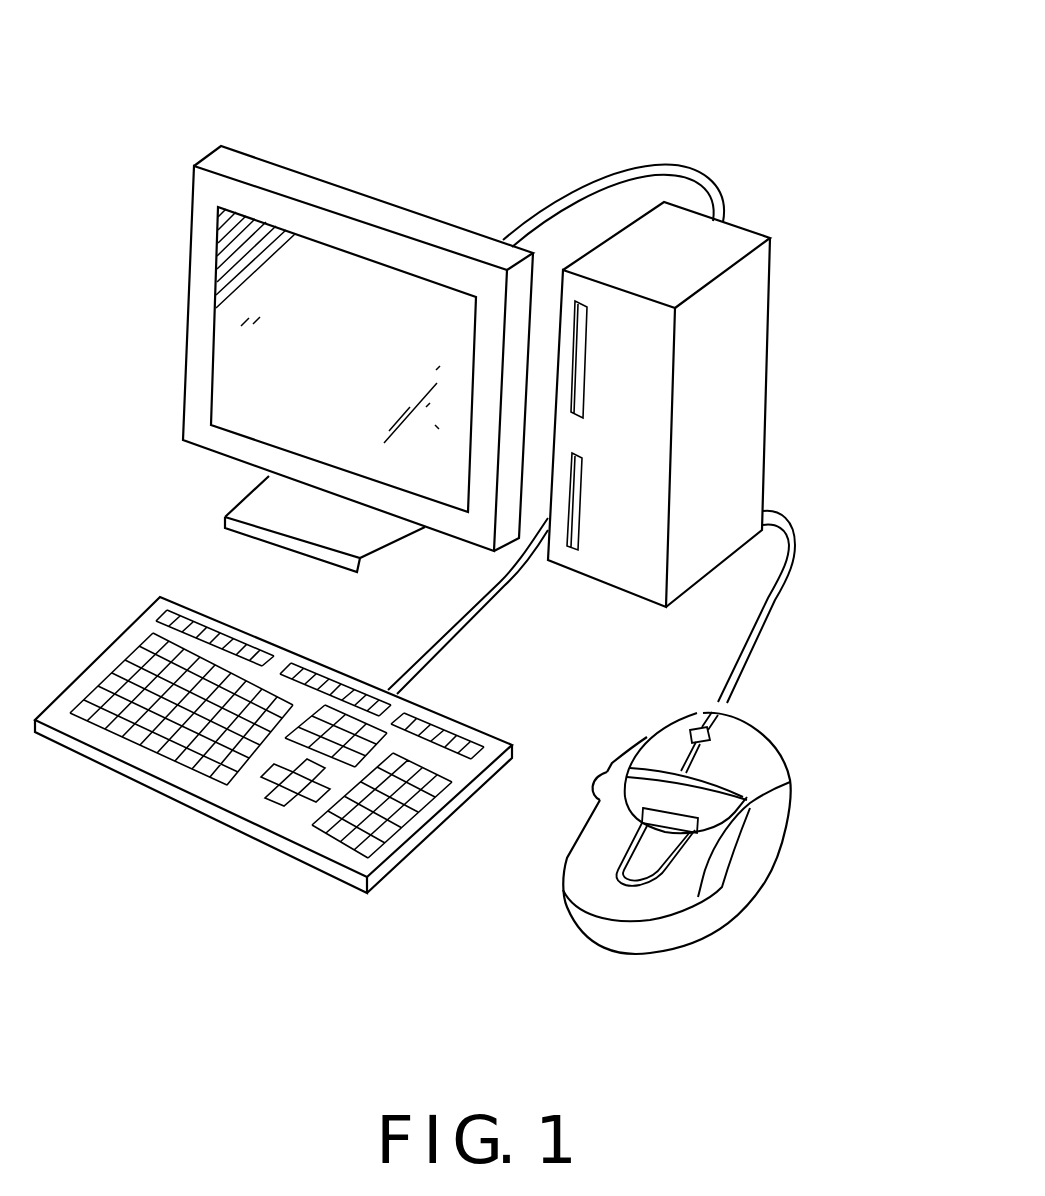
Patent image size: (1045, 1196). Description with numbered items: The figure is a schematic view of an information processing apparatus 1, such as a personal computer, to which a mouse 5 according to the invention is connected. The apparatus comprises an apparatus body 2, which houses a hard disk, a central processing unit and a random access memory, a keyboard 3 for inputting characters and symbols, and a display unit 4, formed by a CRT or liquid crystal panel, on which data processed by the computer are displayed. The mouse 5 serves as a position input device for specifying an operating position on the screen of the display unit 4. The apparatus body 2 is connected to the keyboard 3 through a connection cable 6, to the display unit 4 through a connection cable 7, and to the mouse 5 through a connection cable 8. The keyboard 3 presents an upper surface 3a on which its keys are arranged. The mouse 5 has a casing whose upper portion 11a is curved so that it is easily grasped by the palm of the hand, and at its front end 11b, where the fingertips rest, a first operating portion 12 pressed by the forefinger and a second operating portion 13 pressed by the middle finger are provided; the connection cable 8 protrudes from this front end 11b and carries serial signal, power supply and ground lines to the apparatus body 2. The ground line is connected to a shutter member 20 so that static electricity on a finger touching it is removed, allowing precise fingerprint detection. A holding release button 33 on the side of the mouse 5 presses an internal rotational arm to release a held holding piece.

The information processing apparatus 1 is at (818, 86).
The apparatus body 2 is at (747, 243).
The keyboard 3 is at (352, 893).
The upper surface 3a is at (287, 822).
The display unit 4 is at (388, 215).
The mouse 5 is at (717, 930).
The connection cable 6 is at (477, 620).
The connection cable 7 is at (692, 168).
The connection cable 8 is at (792, 567).
The upper portion 11a is at (703, 870).
The front end 11b is at (748, 717).
The first operating portion 12 is at (668, 731).
The second operating portion 13 is at (768, 756).
The shutter member 20 is at (640, 857).
The holding release button 33 is at (594, 776).